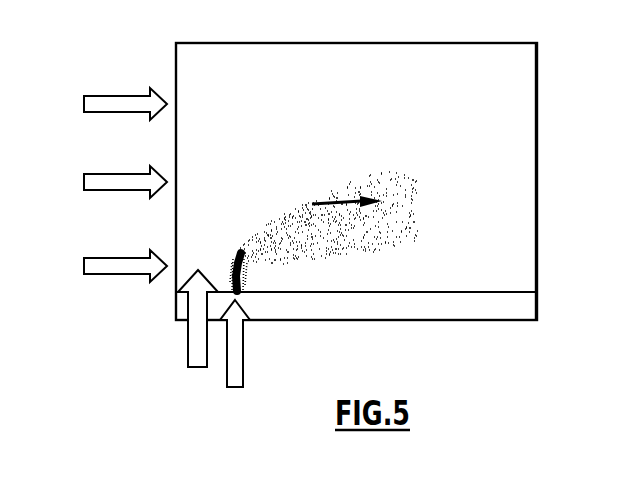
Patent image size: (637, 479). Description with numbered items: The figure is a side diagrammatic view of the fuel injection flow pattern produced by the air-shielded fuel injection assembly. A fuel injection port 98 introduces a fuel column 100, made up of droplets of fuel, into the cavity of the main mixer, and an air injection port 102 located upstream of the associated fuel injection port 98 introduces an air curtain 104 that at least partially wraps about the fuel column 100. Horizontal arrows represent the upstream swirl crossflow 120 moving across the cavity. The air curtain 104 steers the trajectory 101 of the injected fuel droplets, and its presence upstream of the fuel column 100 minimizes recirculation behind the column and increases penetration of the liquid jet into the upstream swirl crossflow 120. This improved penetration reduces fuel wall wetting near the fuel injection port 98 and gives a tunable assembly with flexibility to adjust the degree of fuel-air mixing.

The fuel injection port 98 is at (243, 350).
The fuel column 100 is at (234, 250).
The trajectory 101 is at (332, 195).
The air injection port 102 is at (140, 324).
The air curtain 104 is at (188, 350).
The upstream swirl crossflow 120 is at (101, 174).